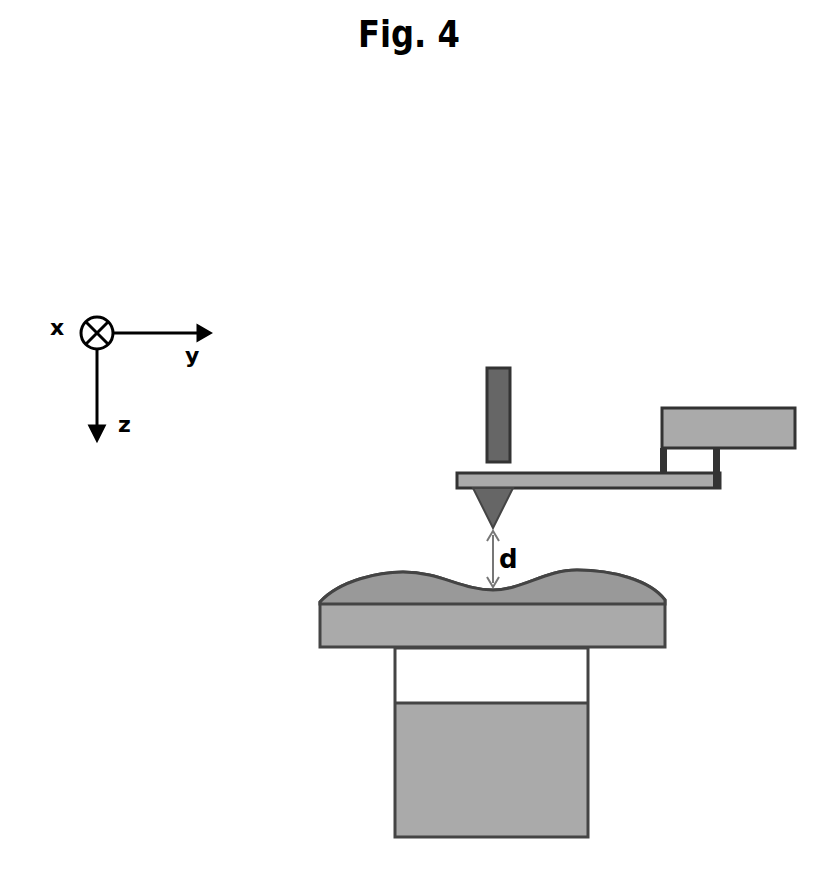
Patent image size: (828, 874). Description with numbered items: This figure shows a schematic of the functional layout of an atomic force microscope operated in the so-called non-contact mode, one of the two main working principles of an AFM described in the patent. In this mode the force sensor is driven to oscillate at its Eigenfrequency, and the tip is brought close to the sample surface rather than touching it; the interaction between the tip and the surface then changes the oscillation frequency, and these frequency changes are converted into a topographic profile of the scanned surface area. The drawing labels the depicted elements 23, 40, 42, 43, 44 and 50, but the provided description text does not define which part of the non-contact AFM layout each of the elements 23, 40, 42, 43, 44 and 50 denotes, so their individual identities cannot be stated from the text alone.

The light source / probe 23 is at (485, 417).
The cantilever 40 is at (603, 492).
The probe tip 42 is at (487, 512).
The cantilever holder 43 is at (660, 457).
The sample 44 is at (343, 582).
The sample stage 50 is at (383, 703).